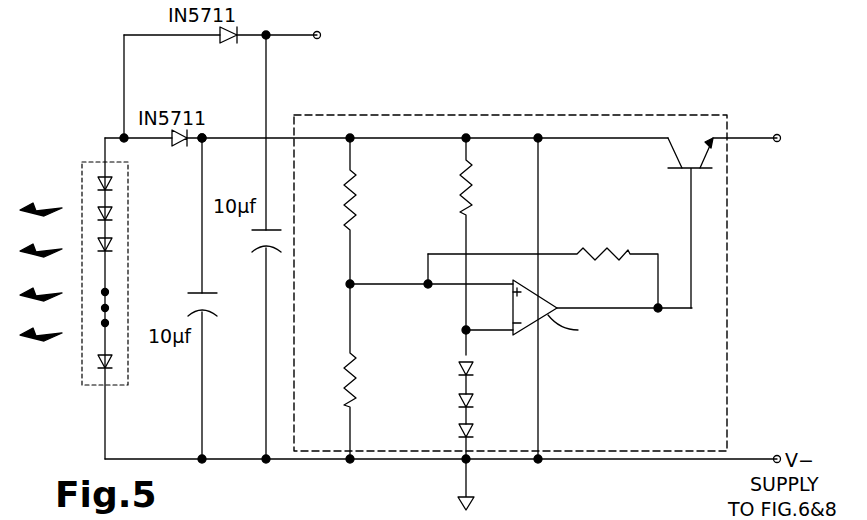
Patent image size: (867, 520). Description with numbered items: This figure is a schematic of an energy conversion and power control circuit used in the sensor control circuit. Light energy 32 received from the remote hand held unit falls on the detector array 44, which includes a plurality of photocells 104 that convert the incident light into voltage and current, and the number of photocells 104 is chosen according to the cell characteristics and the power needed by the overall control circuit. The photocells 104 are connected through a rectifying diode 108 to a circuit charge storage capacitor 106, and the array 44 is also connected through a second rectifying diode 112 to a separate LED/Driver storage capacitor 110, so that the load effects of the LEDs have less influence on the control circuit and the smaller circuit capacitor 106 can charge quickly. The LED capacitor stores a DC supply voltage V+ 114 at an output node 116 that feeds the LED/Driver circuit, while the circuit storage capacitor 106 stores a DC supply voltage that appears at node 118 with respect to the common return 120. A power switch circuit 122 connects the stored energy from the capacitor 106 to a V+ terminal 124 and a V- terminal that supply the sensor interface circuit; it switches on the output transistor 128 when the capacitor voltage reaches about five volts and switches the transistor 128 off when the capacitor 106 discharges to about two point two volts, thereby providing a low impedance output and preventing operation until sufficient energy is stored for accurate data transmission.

The light energy 32 is at (33, 168).
The detector array 44 is at (70, 357).
The photocells 104 is at (112, 182).
The circuit charge storage capacitor 106 is at (200, 290).
The rectifying diode 108 is at (172, 143).
The LED/Driver storage capacitor 110 is at (258, 252).
The second rectifying diode 112 is at (222, 39).
The DC supply voltage V+ 114 is at (368, 21).
The output node 116 is at (318, 31).
The node 118 is at (206, 137).
The common return 120 is at (462, 462).
The power switch circuit 122 is at (588, 102).
The V+ supply terminal to FIG. 6 124 is at (774, 135).
The output transistor 128 is at (700, 172).